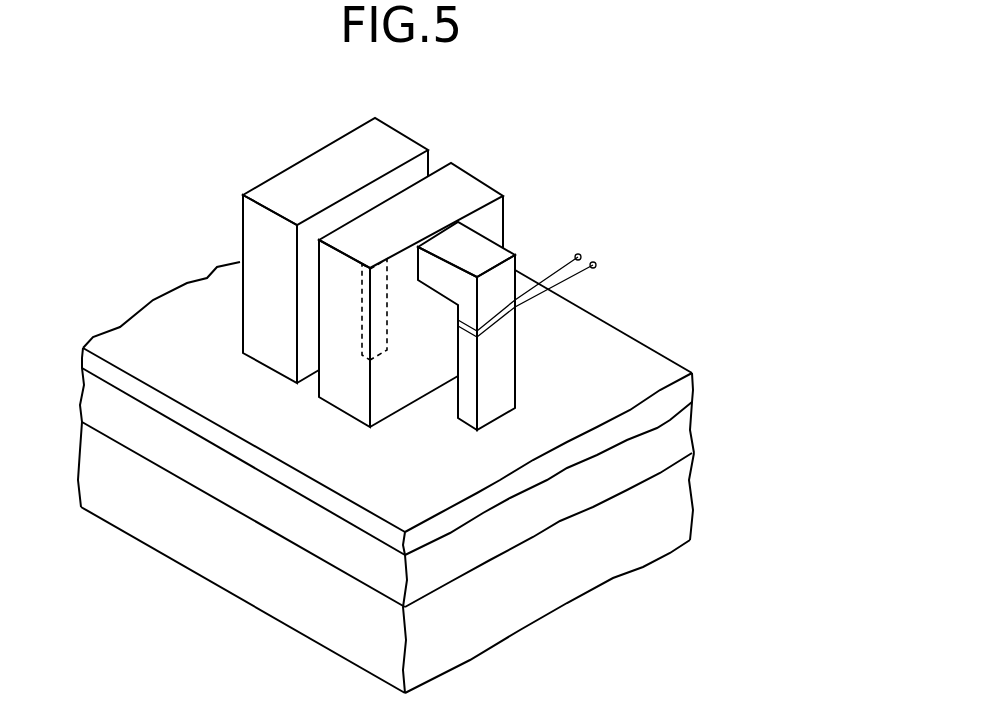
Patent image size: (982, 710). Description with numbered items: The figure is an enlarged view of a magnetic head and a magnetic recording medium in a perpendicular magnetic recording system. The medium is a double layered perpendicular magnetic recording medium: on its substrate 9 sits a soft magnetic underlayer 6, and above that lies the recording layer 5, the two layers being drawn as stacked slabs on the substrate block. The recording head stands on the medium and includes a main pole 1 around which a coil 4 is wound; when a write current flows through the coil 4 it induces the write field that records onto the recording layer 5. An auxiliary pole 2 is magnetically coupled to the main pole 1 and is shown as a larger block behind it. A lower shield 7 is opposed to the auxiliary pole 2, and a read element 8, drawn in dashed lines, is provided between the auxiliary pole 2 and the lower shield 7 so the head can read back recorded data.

The main pole 1 is at (503, 255).
The auxiliary pole 2 is at (467, 184).
The coil 4 is at (597, 265).
The recording layer 5 is at (690, 318).
The soft magnetic underlayer 6 is at (587, 500).
The lower shield 7 is at (308, 182).
The read element 8 is at (378, 338).
The substrate 9 is at (505, 613).